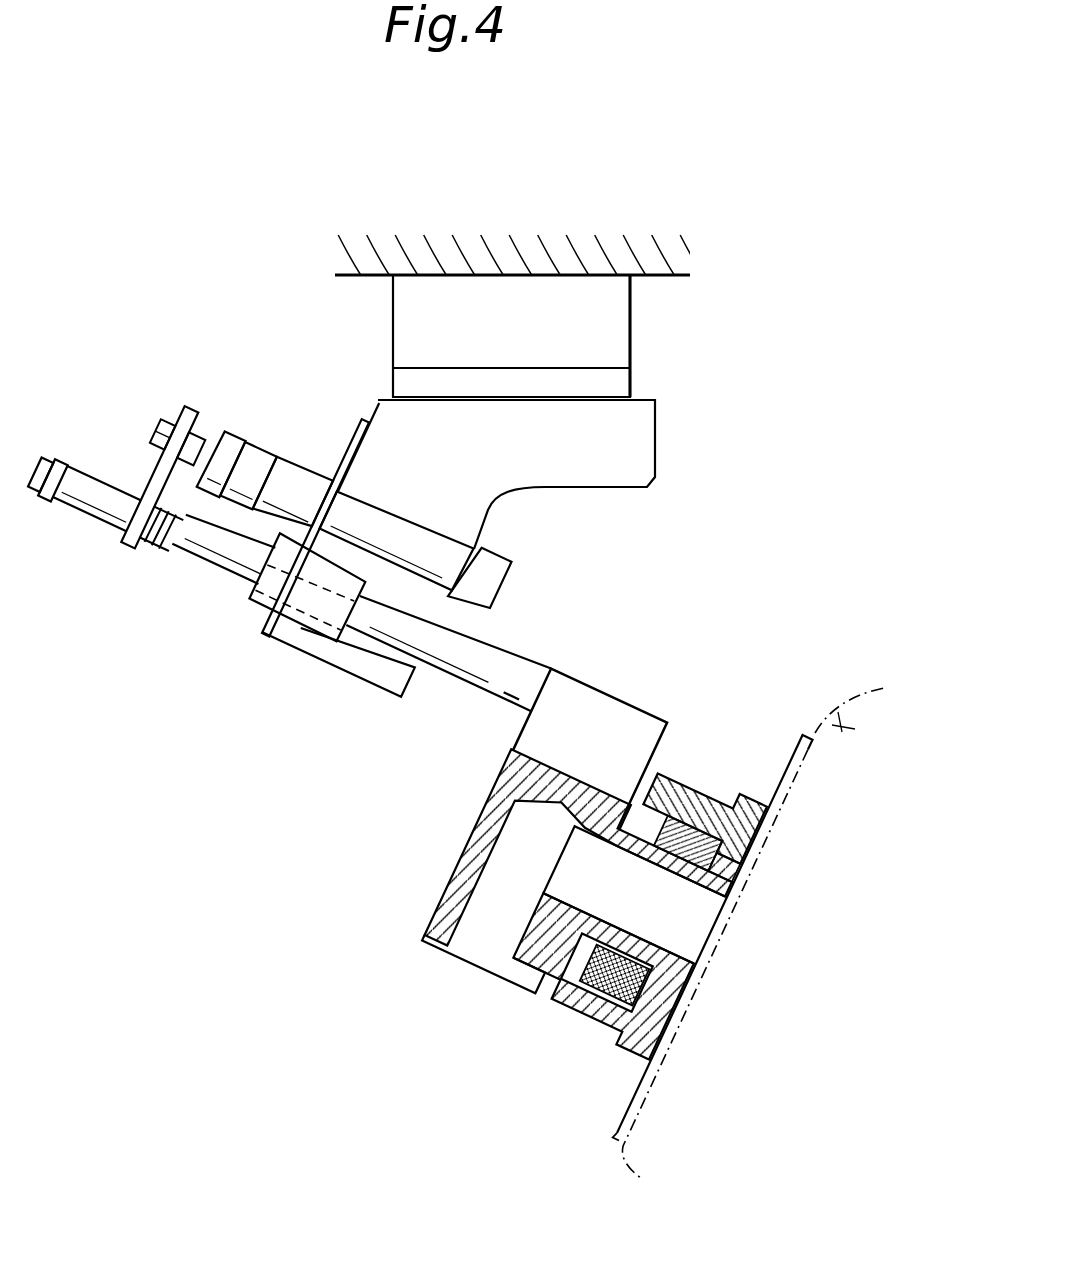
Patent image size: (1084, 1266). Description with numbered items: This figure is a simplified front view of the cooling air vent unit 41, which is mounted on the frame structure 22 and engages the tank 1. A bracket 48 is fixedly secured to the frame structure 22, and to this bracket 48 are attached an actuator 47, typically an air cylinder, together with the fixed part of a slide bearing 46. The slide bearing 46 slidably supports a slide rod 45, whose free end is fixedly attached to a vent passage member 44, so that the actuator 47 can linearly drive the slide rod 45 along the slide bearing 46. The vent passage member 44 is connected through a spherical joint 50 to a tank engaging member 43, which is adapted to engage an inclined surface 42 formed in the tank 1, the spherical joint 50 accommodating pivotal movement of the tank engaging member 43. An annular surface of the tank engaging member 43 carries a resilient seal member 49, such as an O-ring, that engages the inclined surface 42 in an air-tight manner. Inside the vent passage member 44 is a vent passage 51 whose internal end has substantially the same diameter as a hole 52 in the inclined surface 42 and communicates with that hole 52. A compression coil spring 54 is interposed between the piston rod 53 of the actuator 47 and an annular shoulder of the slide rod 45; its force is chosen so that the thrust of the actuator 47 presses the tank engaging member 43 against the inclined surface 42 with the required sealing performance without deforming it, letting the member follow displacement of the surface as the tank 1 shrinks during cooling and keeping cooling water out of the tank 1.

The tank 1 is at (761, 920).
The frame structure 22 is at (662, 280).
The cooling air vent unit 41 is at (584, 653).
The inclined surface 42 is at (795, 755).
The tank engaging member 43 is at (690, 787).
The vent passage member 44 is at (468, 828).
The slide rod 45 is at (470, 704).
The slide bearing 46 is at (303, 640).
The actuator 47 is at (304, 478).
The bracket 48 is at (378, 402).
The resilient seal member 49 is at (752, 838).
The spherical joint 50 is at (737, 875).
The vent passage 51 is at (512, 962).
The hole 52 is at (720, 962).
The piston rod 53 is at (210, 442).
The compression coil spring 54 is at (160, 543).